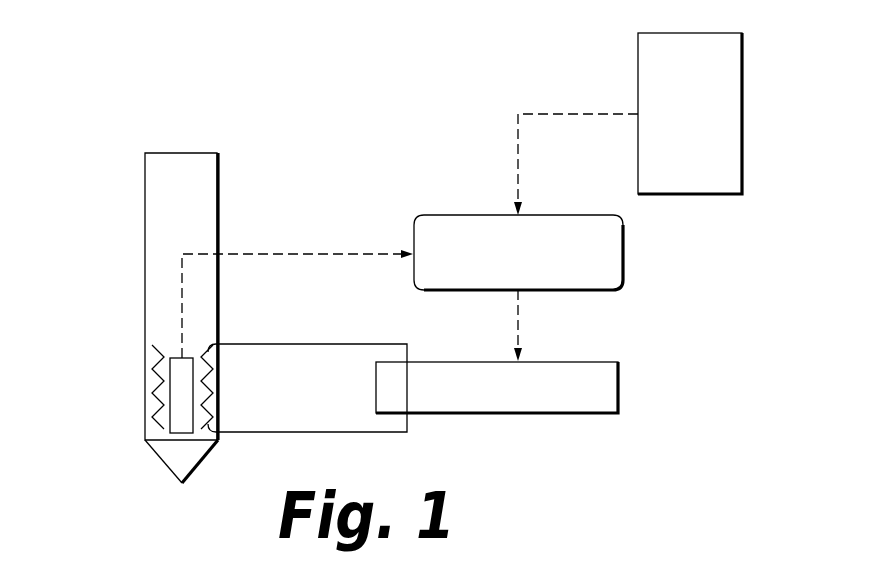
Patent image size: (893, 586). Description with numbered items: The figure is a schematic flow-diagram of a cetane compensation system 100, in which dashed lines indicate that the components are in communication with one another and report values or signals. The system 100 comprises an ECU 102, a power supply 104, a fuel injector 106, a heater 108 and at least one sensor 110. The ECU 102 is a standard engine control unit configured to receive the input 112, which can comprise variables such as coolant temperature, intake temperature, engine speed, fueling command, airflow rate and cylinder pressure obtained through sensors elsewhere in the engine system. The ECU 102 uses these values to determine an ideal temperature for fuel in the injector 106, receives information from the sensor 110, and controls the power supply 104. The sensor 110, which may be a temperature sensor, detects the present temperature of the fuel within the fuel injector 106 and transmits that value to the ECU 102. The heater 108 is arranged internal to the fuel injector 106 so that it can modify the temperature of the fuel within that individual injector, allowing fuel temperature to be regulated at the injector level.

The cetane compensation system 100 is at (102, 104).
The ECU 102 is at (499, 264).
The power supply 104 is at (476, 398).
The fuel injector 106 is at (200, 153).
The heater 108 is at (155, 408).
The sensor 110 is at (175, 357).
The input 112 is at (669, 130).